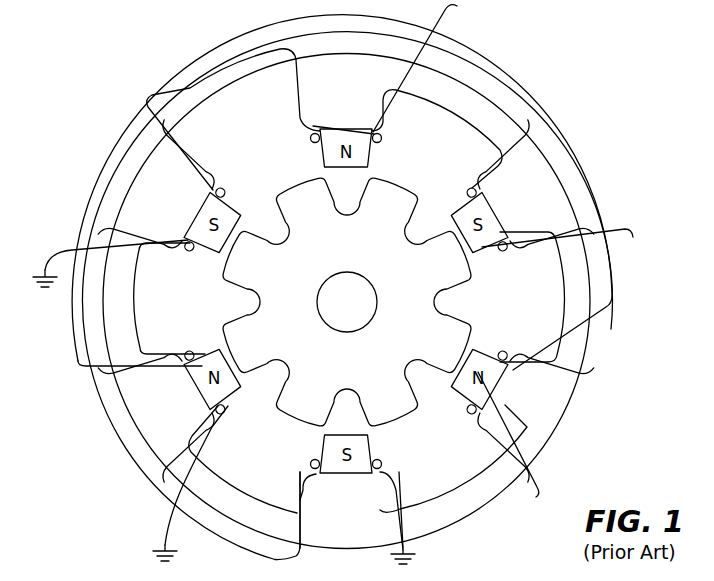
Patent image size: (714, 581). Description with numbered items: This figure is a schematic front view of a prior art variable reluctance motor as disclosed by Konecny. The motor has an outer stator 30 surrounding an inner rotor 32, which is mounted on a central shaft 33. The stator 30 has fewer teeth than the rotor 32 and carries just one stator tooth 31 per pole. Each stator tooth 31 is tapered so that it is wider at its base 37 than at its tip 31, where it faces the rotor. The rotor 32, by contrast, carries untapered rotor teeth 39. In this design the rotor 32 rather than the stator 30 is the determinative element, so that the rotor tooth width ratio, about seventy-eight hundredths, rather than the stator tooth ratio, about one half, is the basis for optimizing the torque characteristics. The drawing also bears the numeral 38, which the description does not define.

The stator 30 is at (589, 339).
The stator tooth 31 is at (325, 453).
The rotor 32 is at (332, 376).
The shaft 33 is at (357, 312).
The base 37 is at (359, 526).
The winding 38 is at (377, 452).
The rotor tooth 39 is at (463, 282).